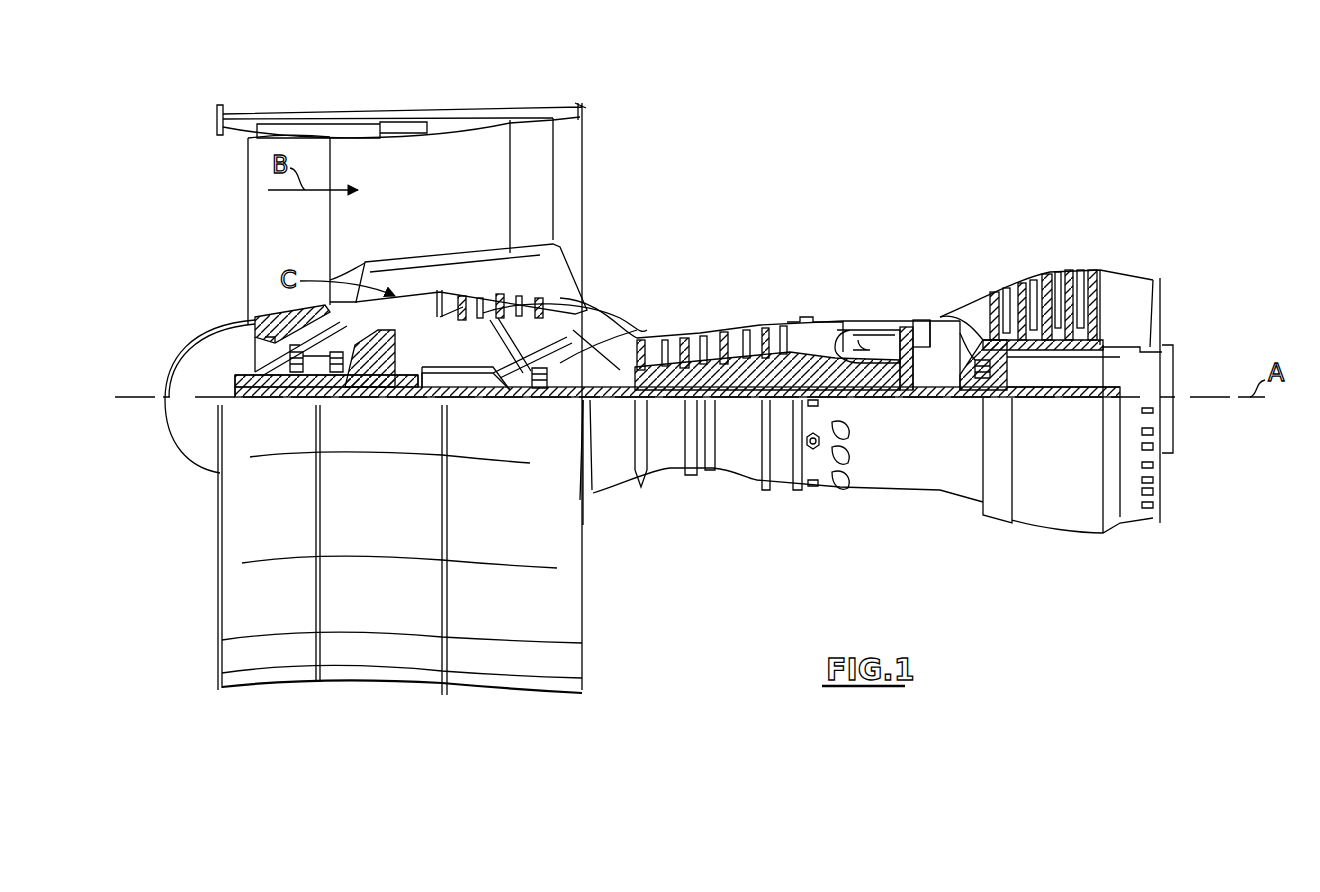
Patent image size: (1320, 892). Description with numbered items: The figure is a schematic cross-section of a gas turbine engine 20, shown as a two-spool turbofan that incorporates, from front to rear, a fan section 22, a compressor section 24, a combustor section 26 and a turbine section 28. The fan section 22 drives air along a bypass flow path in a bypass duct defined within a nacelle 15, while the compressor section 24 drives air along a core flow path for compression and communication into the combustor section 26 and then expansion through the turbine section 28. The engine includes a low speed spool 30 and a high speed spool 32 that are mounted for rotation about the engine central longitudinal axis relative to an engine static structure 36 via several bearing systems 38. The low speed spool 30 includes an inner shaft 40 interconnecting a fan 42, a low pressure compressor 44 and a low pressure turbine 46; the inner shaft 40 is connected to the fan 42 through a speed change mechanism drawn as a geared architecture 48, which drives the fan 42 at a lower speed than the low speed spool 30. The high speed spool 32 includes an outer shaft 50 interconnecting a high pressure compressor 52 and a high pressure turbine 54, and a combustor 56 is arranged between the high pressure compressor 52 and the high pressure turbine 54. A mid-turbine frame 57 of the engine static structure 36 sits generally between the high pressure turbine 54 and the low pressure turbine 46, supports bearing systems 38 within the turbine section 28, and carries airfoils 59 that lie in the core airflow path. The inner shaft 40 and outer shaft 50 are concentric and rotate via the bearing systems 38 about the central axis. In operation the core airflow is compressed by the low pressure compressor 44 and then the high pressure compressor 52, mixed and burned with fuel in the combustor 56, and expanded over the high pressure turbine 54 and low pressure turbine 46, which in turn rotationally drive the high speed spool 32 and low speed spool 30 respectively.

The nacelle 15 is at (404, 117).
The gas turbine engine 20 is at (858, 167).
The fan section 22 is at (332, 104).
The compressor section 24 is at (635, 304).
The combustor section 26 is at (857, 298).
The turbine section 28 is at (1003, 258).
The low speed spool 30 is at (740, 400).
The high speed spool 32 is at (780, 340).
The engine static structure 36 is at (780, 487).
The bearing systems 38 is at (537, 378).
The inner shaft 40 is at (605, 400).
The fan 42 is at (304, 246).
The low pressure compressor 44 is at (512, 306).
The low pressure turbine 46 is at (1048, 277).
The geared architecture 48 is at (408, 383).
The outer shaft 50 is at (862, 398).
The high pressure compressor 52 is at (717, 367).
The high pressure turbine 54 is at (917, 327).
The combustor 56 is at (857, 347).
The mid-turbine frame 57 is at (963, 312).
The airfoils 59 is at (960, 333).